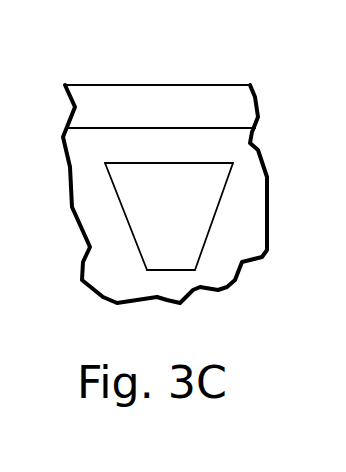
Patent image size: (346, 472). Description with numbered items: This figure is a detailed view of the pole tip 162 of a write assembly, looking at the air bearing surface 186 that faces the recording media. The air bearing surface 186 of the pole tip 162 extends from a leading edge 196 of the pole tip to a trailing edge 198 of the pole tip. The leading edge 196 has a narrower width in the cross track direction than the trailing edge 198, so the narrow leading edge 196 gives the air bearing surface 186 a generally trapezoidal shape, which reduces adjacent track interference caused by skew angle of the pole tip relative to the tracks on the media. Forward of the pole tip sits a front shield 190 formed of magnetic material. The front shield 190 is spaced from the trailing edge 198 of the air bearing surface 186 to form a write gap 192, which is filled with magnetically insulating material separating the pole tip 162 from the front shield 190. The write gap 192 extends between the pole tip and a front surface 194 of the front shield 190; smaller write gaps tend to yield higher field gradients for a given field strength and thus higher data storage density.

The pole tip 162 is at (212, 178).
The air bearing surface 186 is at (190, 218).
The front shield 190 is at (163, 116).
The write gap 192 is at (168, 158).
The front surface 194 is at (199, 129).
The leading edge 196 is at (178, 270).
The trailing edge 198 is at (117, 165).